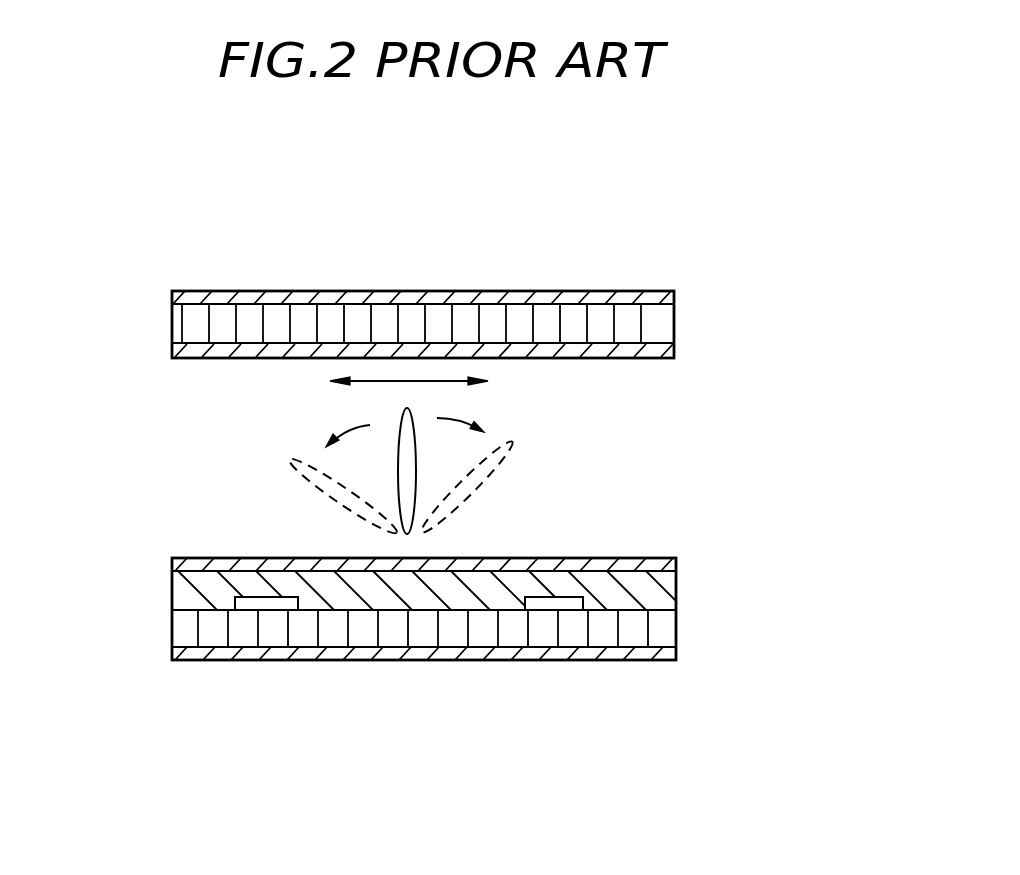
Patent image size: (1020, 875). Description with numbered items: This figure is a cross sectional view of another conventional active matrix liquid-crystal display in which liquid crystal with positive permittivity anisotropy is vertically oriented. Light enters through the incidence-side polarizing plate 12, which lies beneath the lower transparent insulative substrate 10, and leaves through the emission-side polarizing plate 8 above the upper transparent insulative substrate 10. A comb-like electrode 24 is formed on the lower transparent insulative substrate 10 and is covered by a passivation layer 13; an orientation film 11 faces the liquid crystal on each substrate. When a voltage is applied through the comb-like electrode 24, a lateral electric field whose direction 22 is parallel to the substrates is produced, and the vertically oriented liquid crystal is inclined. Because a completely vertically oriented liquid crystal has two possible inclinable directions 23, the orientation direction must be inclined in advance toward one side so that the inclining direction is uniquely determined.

The emission-side polarizing plate 8 is at (640, 291).
The transparent insulative substrate 10 is at (658, 323).
The orientation film 11 is at (588, 565).
The incidence-side polarizing plate 12 is at (545, 660).
The passivation 13 is at (665, 582).
The direction of electric field 22 is at (405, 378).
The inclinable direction of LC 23 is at (335, 510).
The comb-like electrode 24 is at (253, 605).